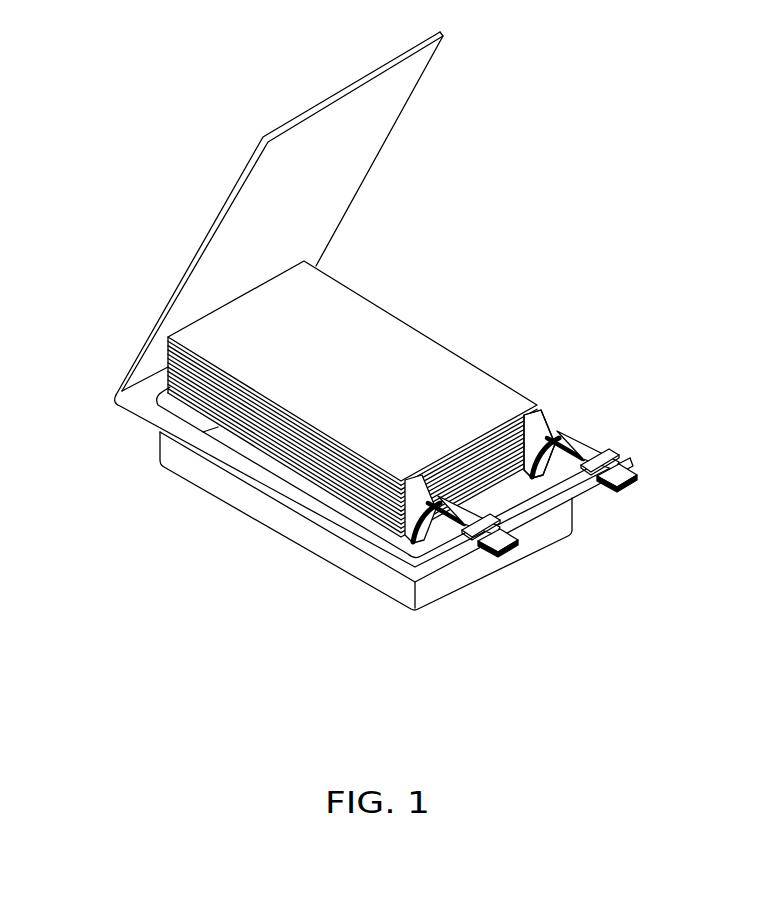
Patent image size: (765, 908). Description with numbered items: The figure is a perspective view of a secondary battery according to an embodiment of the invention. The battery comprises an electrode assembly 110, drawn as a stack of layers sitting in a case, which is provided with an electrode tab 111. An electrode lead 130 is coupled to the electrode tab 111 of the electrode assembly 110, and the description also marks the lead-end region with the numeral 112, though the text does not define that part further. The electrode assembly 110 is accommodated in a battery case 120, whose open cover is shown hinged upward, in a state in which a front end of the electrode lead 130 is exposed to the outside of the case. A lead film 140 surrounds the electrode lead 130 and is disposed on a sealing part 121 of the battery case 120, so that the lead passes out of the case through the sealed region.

The electrode assembly 110 is at (352, 458).
The electrode tab 111 is at (390, 527).
The electrode lead end 112 is at (538, 430).
The battery case 120 is at (122, 388).
The sealing part 121 is at (272, 485).
The electrode lead 130 is at (447, 520).
The lead film 140 is at (460, 540).